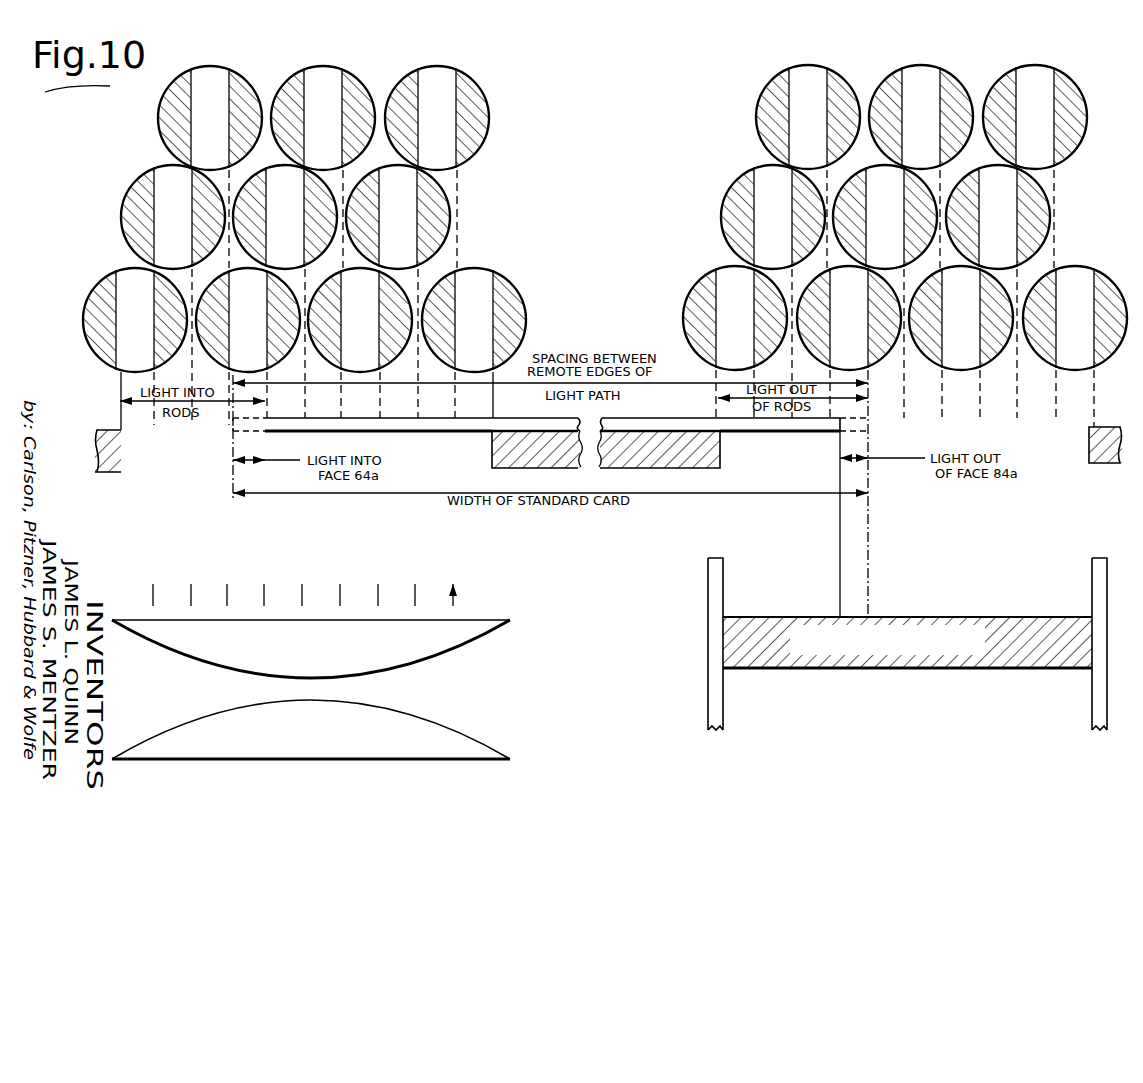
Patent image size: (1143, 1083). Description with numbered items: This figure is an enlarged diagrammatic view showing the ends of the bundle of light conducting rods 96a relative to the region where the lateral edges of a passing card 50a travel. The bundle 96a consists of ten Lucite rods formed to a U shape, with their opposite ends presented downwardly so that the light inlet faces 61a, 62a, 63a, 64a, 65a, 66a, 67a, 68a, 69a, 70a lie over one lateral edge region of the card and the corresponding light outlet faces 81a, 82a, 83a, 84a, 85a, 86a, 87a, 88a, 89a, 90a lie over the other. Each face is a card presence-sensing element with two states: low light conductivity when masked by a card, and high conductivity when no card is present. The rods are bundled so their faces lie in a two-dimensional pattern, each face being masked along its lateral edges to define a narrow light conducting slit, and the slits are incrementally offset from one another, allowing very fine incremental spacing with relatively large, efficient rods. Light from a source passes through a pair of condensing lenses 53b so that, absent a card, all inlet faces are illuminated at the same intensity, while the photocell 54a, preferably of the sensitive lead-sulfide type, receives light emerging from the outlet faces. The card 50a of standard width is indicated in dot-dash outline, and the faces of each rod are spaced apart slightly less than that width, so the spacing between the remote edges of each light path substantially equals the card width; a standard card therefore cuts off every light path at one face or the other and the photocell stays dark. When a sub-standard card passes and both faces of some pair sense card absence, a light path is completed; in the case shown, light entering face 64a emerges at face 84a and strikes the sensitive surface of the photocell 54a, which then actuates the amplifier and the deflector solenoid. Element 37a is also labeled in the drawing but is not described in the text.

The light inlet face 61a is at (135, 320).
The light inlet face 62a is at (173, 217).
The light inlet face 63a is at (210, 118).
The light inlet face 64a is at (248, 320).
The light inlet face 65a is at (285, 217).
The light inlet face 66a is at (323, 118).
The light inlet face 67a is at (360, 320).
The light inlet face 68a is at (398, 217).
The light inlet face 69a is at (437, 118).
The light inlet face 70a is at (474, 320).
The light outlet face 81a is at (735, 318).
The light outlet face 82a is at (773, 217).
The light outlet face 83a is at (808, 117).
The light outlet face 84a is at (849, 318).
The light outlet face 85a is at (885, 217).
The light outlet face 86a is at (921, 117).
The light outlet face 87a is at (961, 318).
The light outlet face 88a is at (998, 217).
The light outlet face 89a is at (1035, 117).
The light outlet face 90a is at (1075, 318).
The bundle of Lucite rods 96a is at (90, 217).
The card 50a is at (397, 418).
The card masking member 37a is at (719, 474).
The condensing lenses 53b is at (458, 723).
The photocell 54a is at (1098, 570).